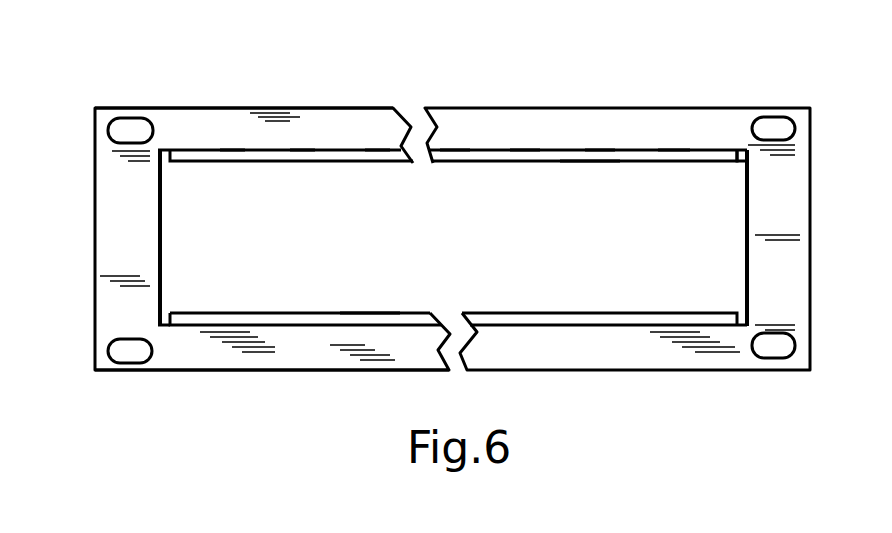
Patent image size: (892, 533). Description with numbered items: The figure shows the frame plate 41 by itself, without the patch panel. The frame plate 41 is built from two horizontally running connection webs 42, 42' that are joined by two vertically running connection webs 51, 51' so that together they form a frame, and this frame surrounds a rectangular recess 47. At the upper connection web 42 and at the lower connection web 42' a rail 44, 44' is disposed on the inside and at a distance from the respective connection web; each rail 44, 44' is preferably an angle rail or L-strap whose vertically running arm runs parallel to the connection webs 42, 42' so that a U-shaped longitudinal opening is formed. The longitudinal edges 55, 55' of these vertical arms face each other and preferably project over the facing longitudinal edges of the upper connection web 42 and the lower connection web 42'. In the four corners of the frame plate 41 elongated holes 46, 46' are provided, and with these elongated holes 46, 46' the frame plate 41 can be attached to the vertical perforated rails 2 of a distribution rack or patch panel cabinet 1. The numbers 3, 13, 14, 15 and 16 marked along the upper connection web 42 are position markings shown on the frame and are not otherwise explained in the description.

The frame plate 41 is at (672, 93).
The upper horizontally running connection web 42 is at (244, 96).
The lower horizontally running connection web 42' is at (272, 352).
The rail 44 is at (452, 198).
The rail 44' is at (452, 293).
The elongated hole 46 is at (93, 240).
The elongated hole 46' is at (818, 237).
The rectangular recess 47 is at (747, 183).
The vertically running connection web 51 is at (173, 238).
The vertically running connection web 51' is at (720, 238).
The longitudinal edge 55 is at (590, 203).
The longitudinal edge 55' is at (370, 271).
The distribution rack or patch panel cabinet 1 is at (232, 134).
The vertical perforated rail 2 is at (302, 134).
The lead position 3 is at (377, 134).
The lead position 13 is at (456, 134).
The lead position 14 is at (527, 134).
The lead position 15 is at (602, 134).
The lead position 16 is at (675, 134).